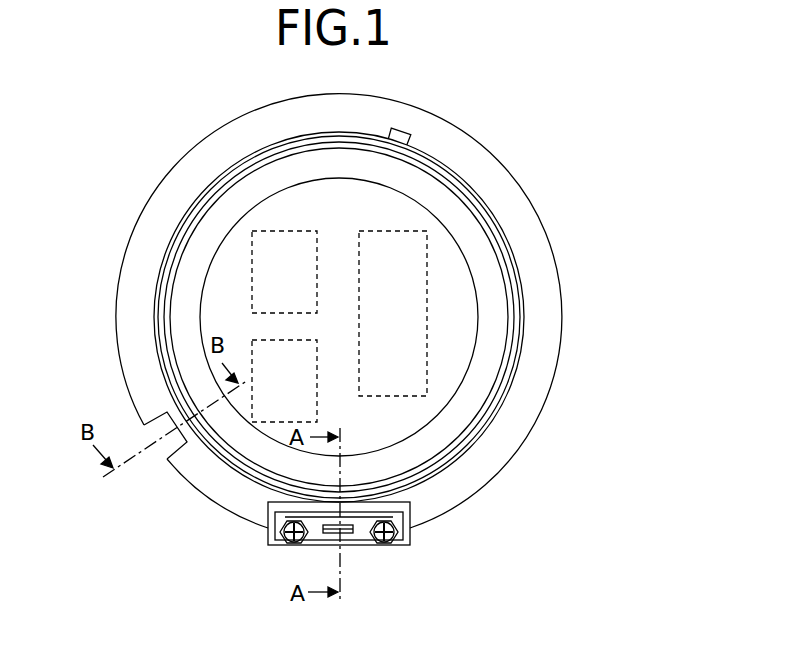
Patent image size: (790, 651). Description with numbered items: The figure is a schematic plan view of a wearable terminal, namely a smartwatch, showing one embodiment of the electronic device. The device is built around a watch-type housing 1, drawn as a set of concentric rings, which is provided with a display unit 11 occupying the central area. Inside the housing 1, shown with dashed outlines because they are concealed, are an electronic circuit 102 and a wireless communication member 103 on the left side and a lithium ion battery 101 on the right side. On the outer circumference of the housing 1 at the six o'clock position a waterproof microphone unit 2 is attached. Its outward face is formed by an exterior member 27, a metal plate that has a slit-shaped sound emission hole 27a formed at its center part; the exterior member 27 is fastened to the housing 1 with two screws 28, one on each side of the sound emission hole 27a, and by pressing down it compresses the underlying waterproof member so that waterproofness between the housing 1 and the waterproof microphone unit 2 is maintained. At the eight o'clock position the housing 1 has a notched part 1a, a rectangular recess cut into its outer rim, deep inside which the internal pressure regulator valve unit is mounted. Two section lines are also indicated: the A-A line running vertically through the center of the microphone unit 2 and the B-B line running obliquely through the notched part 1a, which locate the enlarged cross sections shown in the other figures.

The housing 1 is at (537, 242).
The notched part 1a is at (178, 427).
The display unit 11 is at (310, 217).
The lithium ion battery 101 is at (427, 240).
The electronic circuit 102 is at (250, 243).
The wireless communication member 103 is at (250, 342).
The waterproof microphone unit 2 is at (383, 565).
The exterior member 27 is at (403, 537).
The sound emission hole 27a is at (346, 537).
The screws 28 is at (285, 545).